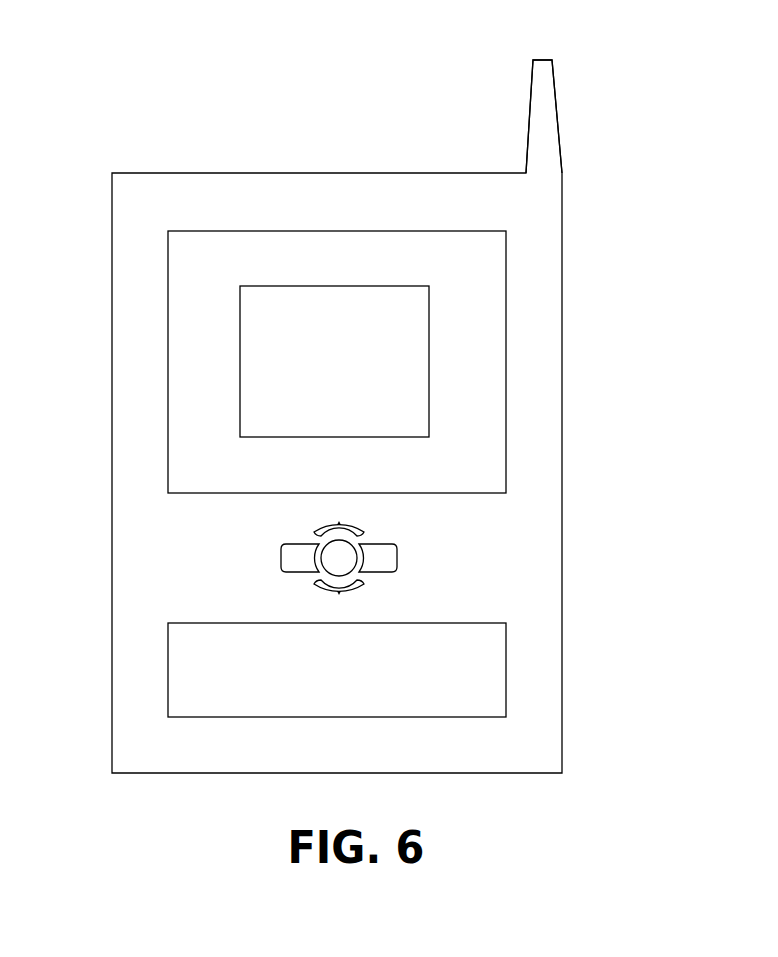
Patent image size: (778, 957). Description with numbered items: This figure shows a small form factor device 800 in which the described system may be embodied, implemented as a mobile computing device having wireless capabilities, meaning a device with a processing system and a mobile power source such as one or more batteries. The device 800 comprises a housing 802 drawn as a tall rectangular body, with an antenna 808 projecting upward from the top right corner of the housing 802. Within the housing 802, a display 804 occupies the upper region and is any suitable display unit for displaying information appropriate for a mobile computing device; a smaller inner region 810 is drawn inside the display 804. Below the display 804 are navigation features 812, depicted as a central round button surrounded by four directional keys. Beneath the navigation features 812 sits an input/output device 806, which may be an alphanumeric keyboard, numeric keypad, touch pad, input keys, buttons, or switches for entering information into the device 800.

The small form factor device 800 is at (130, 80).
The housing 802 is at (562, 473).
The display 804 is at (506, 249).
The input/output (I/O) device 806 is at (506, 660).
The antenna 808 is at (529, 110).
The display window 810 is at (429, 380).
The navigation features 812 is at (408, 549).